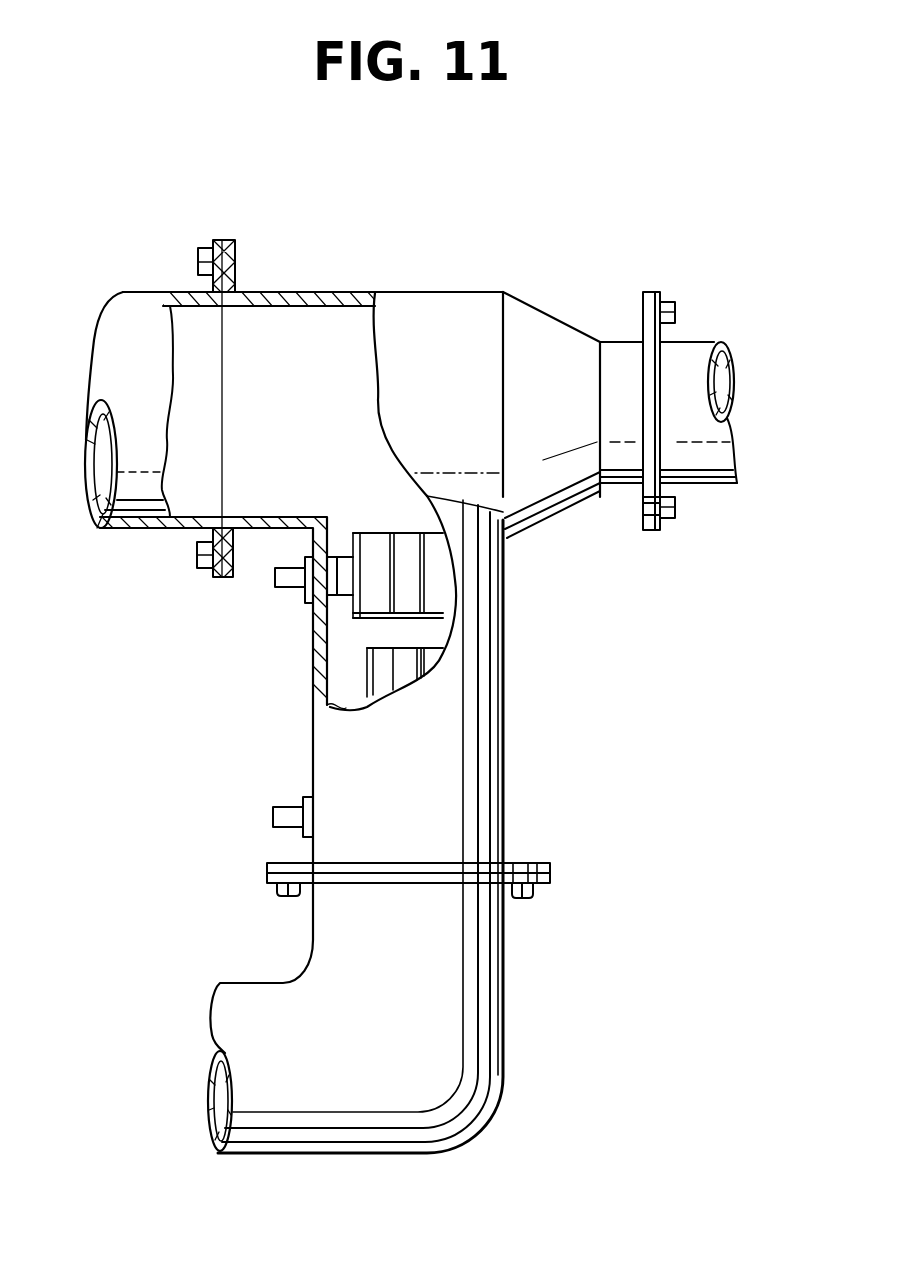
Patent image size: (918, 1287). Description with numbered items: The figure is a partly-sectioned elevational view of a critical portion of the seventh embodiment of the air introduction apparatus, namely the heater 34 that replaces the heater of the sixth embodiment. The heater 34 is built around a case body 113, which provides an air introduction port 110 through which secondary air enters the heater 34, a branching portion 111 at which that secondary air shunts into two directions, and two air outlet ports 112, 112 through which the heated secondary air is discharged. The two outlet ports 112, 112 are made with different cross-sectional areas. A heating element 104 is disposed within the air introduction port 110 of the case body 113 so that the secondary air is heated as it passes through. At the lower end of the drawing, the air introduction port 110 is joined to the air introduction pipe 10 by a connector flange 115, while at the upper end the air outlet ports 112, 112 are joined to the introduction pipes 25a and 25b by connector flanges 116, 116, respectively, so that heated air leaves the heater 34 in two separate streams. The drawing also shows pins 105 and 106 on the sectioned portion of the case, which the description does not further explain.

The air introduction pipe 10 is at (450, 1052).
The introduction pipe 25a is at (147, 312).
The introduction pipe 25b is at (693, 363).
The heater 34 is at (417, 291).
The heating element 104 is at (443, 598).
The pin 105 is at (275, 580).
The pin 106 is at (290, 807).
The air introduction port 110 is at (330, 700).
The branching portion 111 is at (348, 407).
The air outlet port 112 is at (280, 312).
The case body 113 is at (511, 293).
The connector flange 115 is at (550, 868).
The connector flange 116 is at (213, 577).